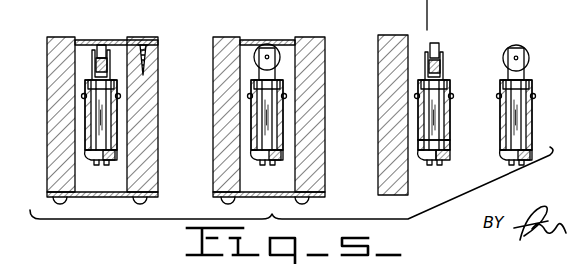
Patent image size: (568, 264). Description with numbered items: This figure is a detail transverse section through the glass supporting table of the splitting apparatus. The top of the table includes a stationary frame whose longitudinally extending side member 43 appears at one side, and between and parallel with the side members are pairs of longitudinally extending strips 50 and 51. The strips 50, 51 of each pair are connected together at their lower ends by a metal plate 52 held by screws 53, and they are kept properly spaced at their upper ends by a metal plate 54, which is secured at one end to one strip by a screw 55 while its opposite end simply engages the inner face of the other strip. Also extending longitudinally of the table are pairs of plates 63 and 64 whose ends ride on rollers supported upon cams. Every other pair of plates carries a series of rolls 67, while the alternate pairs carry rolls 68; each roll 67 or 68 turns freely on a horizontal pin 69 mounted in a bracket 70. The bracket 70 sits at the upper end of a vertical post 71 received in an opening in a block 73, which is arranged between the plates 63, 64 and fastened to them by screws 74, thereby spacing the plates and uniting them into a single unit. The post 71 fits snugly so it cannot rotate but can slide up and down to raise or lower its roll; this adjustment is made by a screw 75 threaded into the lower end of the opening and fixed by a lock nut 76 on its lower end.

The side member 43 is at (387, 171).
The strip 50 is at (55, 119).
The strip 51 is at (158, 135).
The metal plate 52 is at (88, 198).
The screw 53 is at (63, 201).
The metal plate 54 is at (108, 41).
The screw 55 is at (147, 52).
The plate 63 is at (255, 122).
The plate 64 is at (284, 103).
The roll 67 is at (273, 46).
The roll 68 is at (104, 45).
The horizontal pin 69 is at (265, 58).
The bracket 70 is at (277, 72).
The vertical post 71 is at (433, 82).
The block 73 is at (448, 98).
The screw 74 is at (450, 143).
The screw 75 is at (441, 161).
The lock nut 76 is at (428, 161).